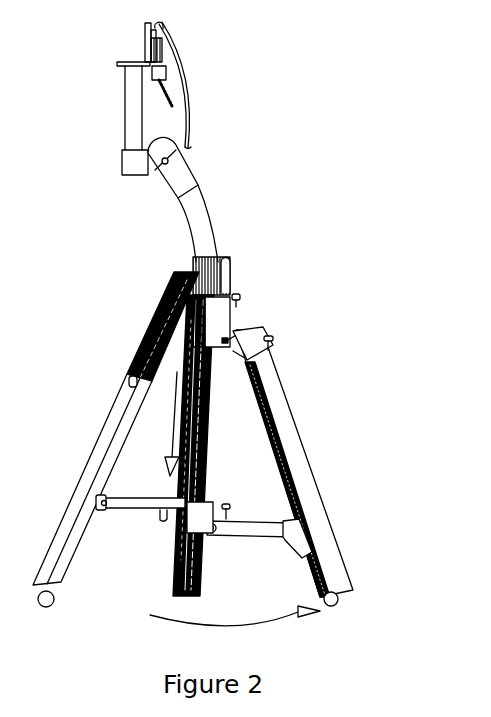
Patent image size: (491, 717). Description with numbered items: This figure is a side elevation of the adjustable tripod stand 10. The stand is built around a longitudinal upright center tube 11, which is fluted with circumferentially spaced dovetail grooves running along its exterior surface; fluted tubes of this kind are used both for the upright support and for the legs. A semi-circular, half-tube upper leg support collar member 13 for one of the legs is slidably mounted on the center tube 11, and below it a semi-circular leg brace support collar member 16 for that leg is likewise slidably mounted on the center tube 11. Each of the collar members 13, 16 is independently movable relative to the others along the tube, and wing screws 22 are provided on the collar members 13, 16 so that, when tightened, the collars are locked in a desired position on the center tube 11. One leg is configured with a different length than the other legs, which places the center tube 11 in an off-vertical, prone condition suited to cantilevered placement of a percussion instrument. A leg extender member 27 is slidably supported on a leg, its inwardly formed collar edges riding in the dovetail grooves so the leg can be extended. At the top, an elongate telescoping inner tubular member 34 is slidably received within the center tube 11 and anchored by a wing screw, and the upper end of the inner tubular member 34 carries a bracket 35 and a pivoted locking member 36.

The adjustable tripod stand 10 is at (197, 324).
The center tube 11 is at (154, 330).
The upper leg support collar member 13 is at (219, 318).
The leg brace support collar member 16 is at (211, 503).
The wing screw 22 is at (241, 297).
The leg extender member 27 is at (296, 444).
The telescoping inner tubular member 34 is at (166, 189).
The bracket 35 is at (123, 173).
The pivoted locking member 36 is at (187, 90).